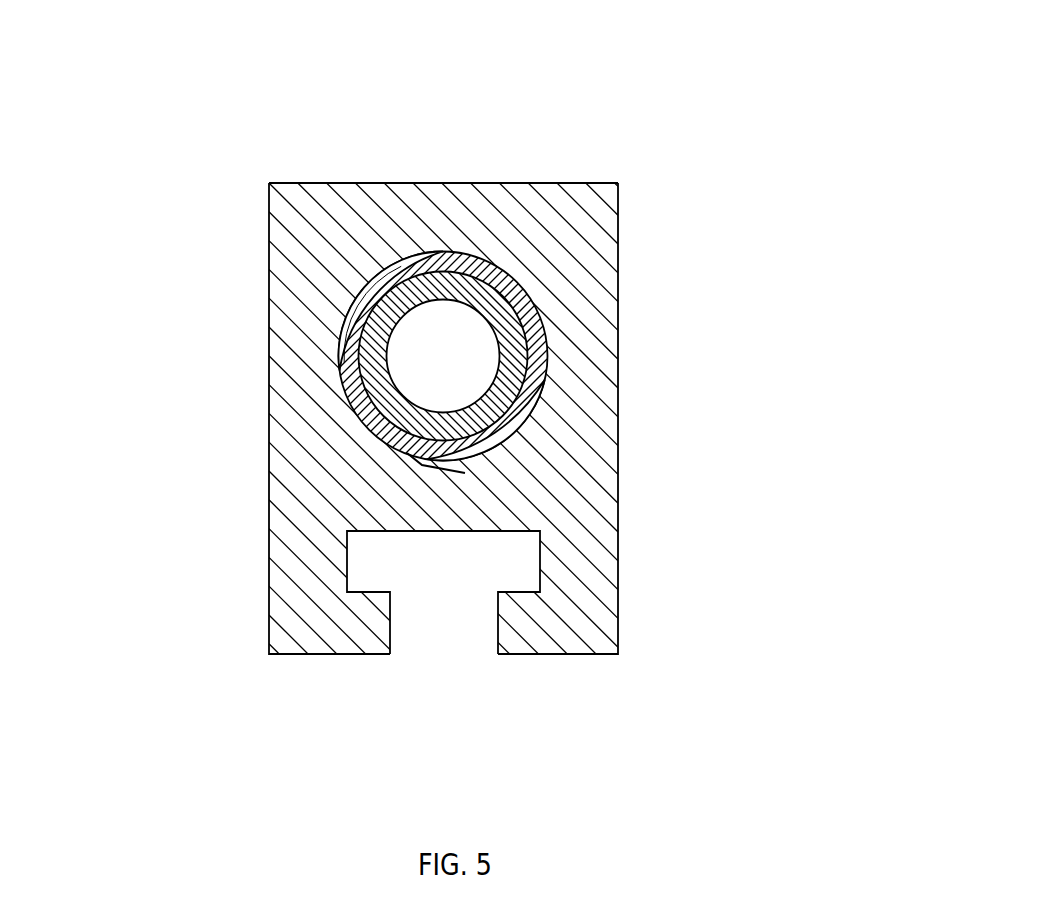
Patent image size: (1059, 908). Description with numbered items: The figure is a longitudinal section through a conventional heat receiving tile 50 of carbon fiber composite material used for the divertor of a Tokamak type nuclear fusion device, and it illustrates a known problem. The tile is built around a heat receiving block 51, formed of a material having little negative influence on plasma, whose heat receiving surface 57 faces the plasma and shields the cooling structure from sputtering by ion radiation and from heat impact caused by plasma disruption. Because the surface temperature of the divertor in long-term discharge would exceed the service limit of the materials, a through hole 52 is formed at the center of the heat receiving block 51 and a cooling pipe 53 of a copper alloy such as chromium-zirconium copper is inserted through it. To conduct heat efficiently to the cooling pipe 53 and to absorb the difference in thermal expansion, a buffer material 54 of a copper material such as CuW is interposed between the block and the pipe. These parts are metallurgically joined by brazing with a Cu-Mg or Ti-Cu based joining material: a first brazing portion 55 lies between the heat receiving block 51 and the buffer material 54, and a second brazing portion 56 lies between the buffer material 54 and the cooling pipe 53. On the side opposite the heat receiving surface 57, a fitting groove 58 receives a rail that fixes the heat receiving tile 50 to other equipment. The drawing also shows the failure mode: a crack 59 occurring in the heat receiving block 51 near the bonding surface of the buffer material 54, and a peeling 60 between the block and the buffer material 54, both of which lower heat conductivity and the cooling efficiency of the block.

The heat receiving tile 50 is at (624, 158).
The heat receiving block 51 is at (290, 222).
The through hole 52 is at (351, 399).
The cooling pipe 53 is at (373, 357).
The buffer material 54 is at (387, 276).
The first brazing portion 55 is at (547, 333).
The second brazing portion 56 is at (547, 378).
The heat receiving surface 57 is at (420, 183).
The fitting groove 58 is at (443, 582).
The crack 59 is at (452, 475).
The peeling 60 is at (345, 312).